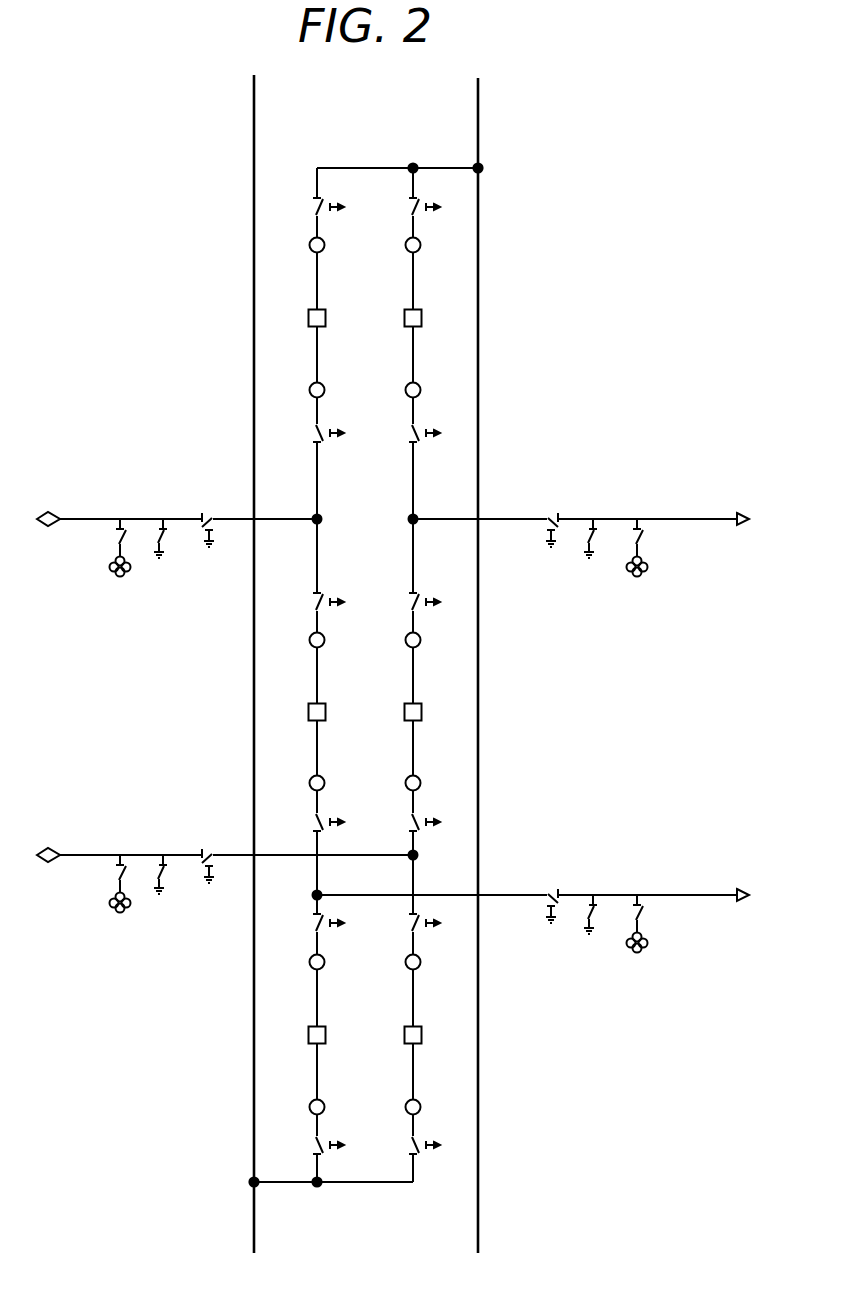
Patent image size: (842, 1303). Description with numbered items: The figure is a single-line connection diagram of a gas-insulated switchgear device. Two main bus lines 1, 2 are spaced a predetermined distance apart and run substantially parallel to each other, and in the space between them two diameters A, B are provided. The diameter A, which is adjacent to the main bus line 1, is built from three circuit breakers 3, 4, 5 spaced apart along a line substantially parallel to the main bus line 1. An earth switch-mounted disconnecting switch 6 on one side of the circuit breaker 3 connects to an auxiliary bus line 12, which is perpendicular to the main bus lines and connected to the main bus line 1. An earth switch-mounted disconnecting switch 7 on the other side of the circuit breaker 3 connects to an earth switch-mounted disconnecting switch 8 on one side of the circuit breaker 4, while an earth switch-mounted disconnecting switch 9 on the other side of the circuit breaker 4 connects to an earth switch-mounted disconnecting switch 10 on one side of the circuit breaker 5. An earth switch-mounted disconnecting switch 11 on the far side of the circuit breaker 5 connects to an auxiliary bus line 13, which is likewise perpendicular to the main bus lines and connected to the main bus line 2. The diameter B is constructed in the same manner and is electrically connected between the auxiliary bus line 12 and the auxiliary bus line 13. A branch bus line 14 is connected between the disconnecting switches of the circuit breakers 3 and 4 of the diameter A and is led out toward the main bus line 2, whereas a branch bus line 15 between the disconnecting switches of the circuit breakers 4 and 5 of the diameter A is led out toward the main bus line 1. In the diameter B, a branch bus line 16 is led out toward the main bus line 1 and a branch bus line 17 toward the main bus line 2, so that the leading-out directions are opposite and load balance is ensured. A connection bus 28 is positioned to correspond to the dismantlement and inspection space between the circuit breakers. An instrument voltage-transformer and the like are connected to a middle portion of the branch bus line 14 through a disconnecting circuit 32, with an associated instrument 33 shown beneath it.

The main bus line 1 is at (252, 117).
The main bus line 2 is at (480, 210).
The circuit breaker 3 is at (309, 1037).
The circuit breaker 4 is at (309, 714).
The circuit breaker 5 is at (309, 320).
The earth switch-mounted disconnecting switch 6 is at (315, 1148).
The earth switch-mounted disconnecting switch 7 is at (313, 925).
The earth switch-mounted disconnecting switch 8 is at (313, 824).
The earth switch-mounted disconnecting switch 9 is at (312, 604).
The earth switch-mounted disconnecting switch 10 is at (312, 434).
The earth switch-mounted disconnecting switch 11 is at (312, 209).
The auxiliary bus line 12 is at (372, 1184).
The auxiliary bus line 13 is at (378, 168).
The branch bus line 14 is at (531, 920).
The branch bus line 15 is at (100, 517).
The branch bus line 16 is at (178, 853).
The branch bus line 17 is at (522, 517).
The connection bus 28 is at (315, 873).
The disconnecting circuit 32 is at (650, 918).
The current transformer 33 is at (650, 950).
The diameter A is at (316, 171).
The diameter B is at (415, 186).